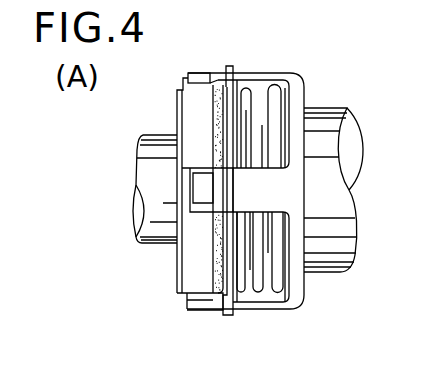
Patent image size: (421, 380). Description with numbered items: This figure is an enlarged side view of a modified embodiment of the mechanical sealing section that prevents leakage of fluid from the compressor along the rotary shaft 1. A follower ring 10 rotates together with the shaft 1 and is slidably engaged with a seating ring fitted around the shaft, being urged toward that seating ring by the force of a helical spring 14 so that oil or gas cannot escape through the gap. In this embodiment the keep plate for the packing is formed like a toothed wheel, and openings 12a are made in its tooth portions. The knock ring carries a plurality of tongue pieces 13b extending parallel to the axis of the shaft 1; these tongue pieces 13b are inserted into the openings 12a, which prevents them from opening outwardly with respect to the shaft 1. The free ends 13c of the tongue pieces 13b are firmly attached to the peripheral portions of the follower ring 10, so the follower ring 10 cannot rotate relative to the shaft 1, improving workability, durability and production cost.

The rotary shaft 1 is at (346, 111).
The follower ring 10 is at (176, 110).
The openings 12a is at (230, 66).
The tongue pieces 13b is at (274, 72).
The free ends 13c is at (199, 79).
The helical spring 14 is at (270, 292).